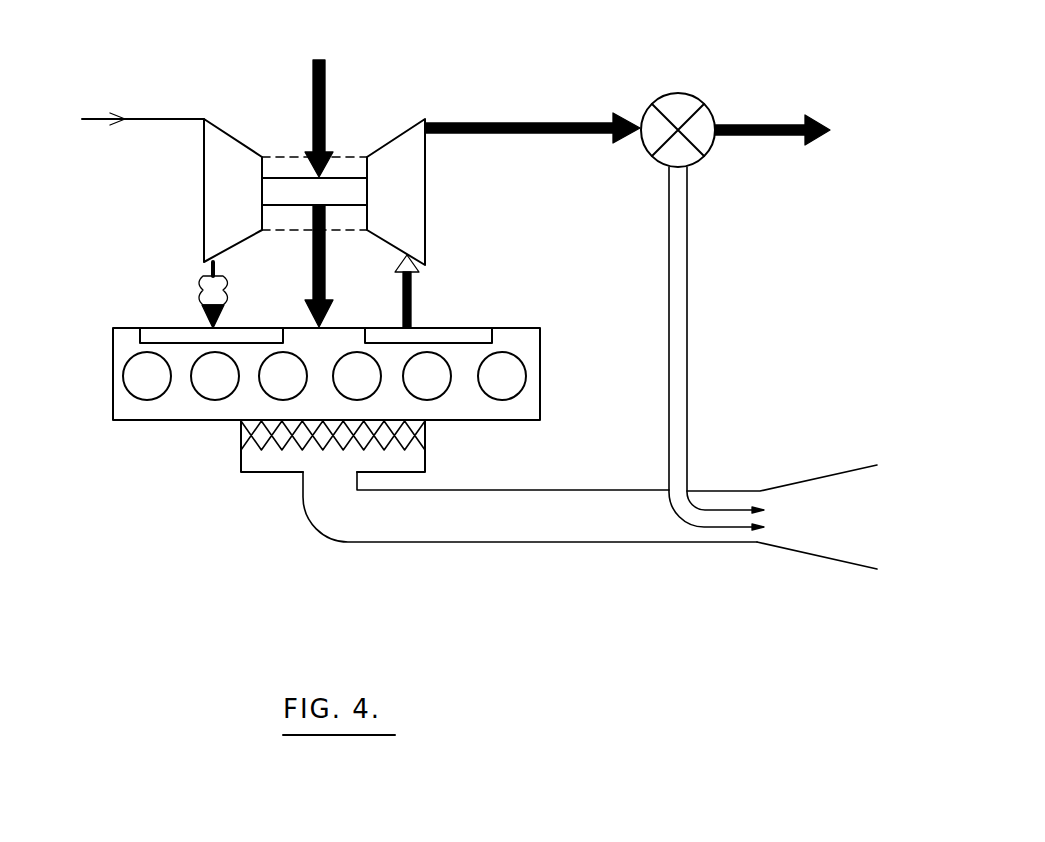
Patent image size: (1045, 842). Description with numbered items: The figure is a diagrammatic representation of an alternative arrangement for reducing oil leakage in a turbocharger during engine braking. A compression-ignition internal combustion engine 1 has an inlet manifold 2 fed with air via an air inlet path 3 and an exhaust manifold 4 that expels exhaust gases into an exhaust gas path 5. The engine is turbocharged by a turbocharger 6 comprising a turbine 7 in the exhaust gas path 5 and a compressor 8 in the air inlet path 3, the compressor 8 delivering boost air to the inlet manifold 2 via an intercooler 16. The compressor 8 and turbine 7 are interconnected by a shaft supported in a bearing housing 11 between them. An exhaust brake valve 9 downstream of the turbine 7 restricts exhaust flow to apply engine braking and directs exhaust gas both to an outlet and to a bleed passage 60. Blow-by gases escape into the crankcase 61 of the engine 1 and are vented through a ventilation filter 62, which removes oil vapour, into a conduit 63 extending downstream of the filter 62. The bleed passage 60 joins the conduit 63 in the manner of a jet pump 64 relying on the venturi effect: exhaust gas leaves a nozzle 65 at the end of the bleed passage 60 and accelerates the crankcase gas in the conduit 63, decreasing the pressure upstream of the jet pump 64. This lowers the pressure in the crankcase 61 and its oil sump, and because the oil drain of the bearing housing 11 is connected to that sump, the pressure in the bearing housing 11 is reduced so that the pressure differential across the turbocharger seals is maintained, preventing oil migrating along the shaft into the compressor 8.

The internal combustion engine 1 is at (320, 362).
The inlet manifold 2 is at (211, 336).
The air inlet path 3 is at (243, 311).
The exhaust manifold 4 is at (455, 327).
The exhaust gas path 5 is at (508, 122).
The turbocharger 6 is at (257, 180).
The turbine 7 is at (398, 204).
The compressor 8 is at (233, 204).
The exhaust brake valve 9 is at (712, 152).
The bearing housing 11 is at (352, 153).
The intercooler 16 is at (200, 295).
The bleed passage 60 is at (690, 352).
The crankcase 61 is at (540, 408).
The ventilation filter 62 is at (295, 452).
The conduit 63 is at (428, 538).
The jet pump 64 is at (718, 514).
The nozzle 65 is at (762, 527).